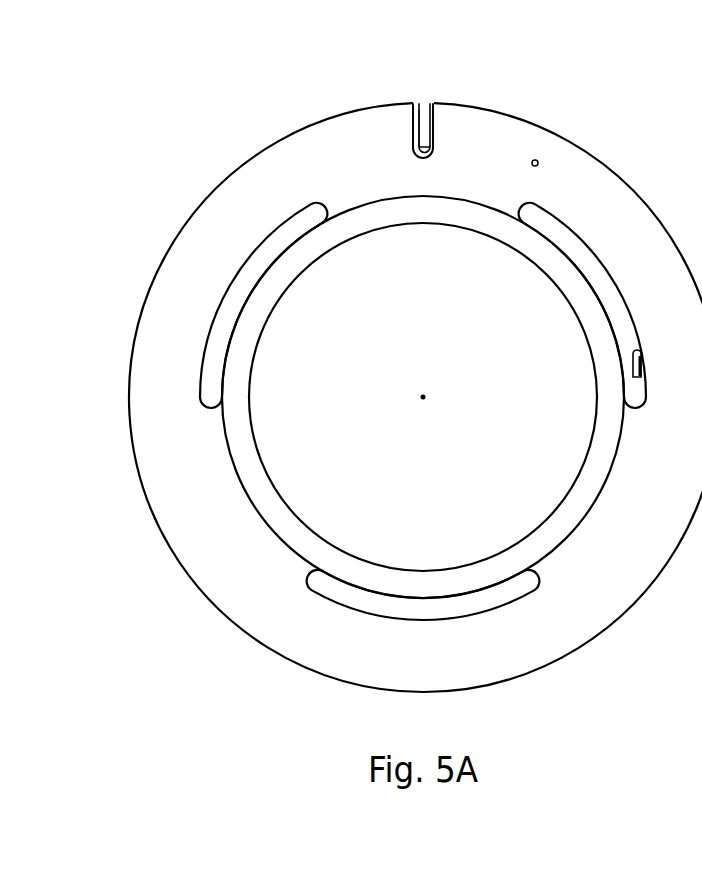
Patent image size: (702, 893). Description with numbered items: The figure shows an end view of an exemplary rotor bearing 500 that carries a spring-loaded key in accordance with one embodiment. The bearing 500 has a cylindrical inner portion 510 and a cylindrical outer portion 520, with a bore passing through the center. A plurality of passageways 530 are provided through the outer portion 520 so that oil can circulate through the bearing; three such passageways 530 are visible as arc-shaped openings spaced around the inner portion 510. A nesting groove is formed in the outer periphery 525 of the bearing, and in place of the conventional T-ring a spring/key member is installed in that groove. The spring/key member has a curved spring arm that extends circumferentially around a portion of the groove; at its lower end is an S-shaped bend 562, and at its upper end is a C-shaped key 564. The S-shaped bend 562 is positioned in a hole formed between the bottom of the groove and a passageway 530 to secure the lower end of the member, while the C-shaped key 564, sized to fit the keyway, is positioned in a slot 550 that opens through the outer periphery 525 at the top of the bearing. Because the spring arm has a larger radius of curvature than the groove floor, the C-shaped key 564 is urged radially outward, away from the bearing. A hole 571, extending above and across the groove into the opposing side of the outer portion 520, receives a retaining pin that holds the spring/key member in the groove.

The bearing 500 is at (415, 371).
The cylindrical inner portion 510 is at (379, 200).
The cylindrical outer portion 520 is at (415, 371).
The outer periphery 525 is at (312, 124).
The passageway 530 is at (423, 411).
The slot 550 is at (433, 120).
The S-shaped bend 562 is at (632, 368).
The C-shaped key 564 is at (423, 101).
The hole 571 is at (531, 163).